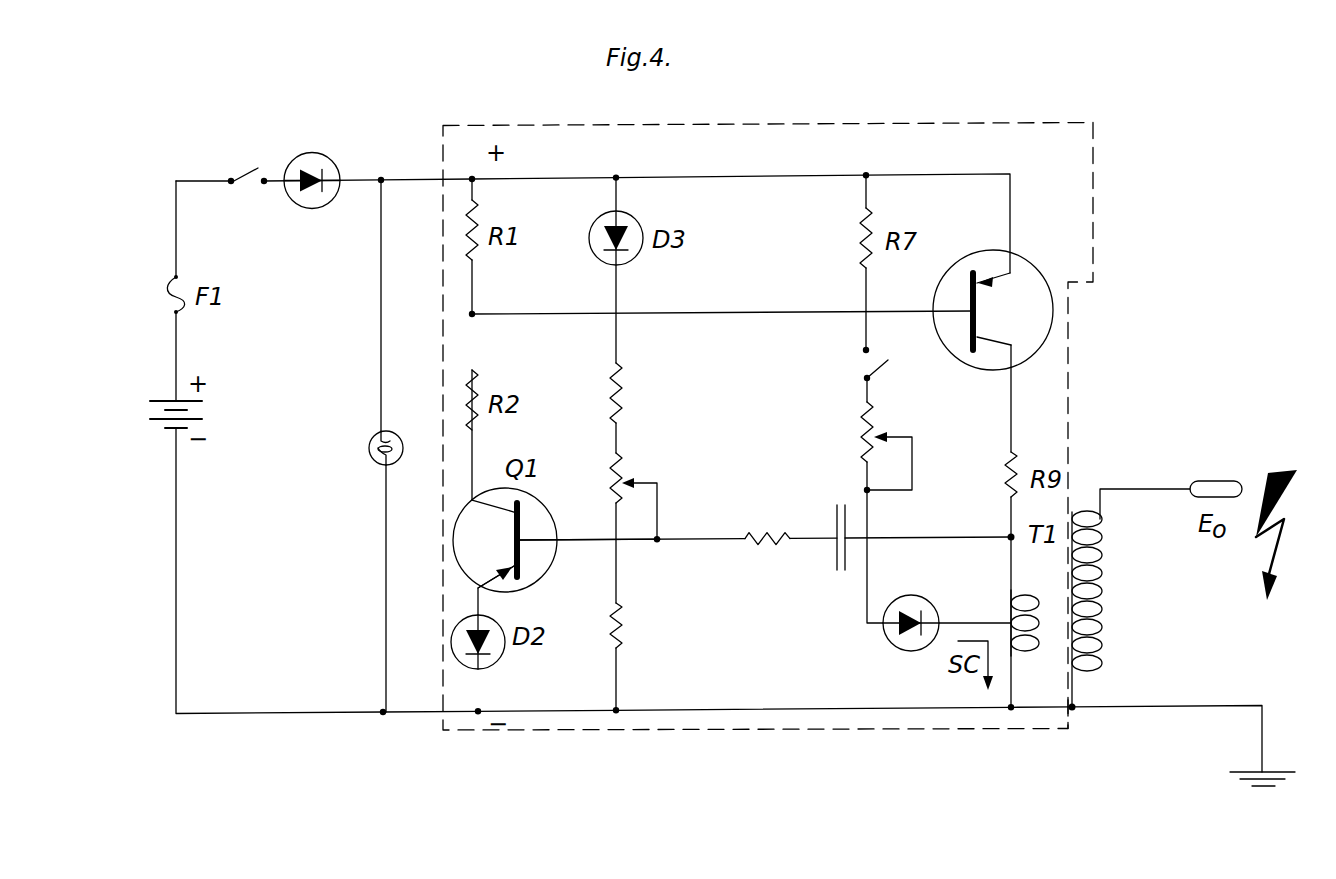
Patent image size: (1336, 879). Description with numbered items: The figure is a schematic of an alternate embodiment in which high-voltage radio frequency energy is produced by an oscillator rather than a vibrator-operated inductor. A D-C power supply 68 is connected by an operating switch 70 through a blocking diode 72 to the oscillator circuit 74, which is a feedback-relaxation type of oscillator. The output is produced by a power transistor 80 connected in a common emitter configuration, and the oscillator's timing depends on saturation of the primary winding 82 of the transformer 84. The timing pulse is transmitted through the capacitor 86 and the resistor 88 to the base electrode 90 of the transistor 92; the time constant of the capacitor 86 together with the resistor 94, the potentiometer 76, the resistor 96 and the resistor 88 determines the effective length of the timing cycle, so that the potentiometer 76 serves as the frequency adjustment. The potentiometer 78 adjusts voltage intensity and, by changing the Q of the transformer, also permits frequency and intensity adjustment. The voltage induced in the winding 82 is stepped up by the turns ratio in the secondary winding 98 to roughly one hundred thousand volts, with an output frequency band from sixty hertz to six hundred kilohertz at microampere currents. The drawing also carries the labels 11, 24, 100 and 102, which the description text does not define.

The indicator lamp 11 is at (389, 431).
The transformer secondary / output 24 is at (1070, 727).
The D-C power supply 68 is at (160, 400).
The operating switch 70 is at (258, 168).
The blocking diode 72 is at (347, 168).
The oscillator circuit 74 is at (795, 123).
The potentiometer 76 is at (620, 466).
The potentiometer 78 is at (875, 403).
The power transistor 80 is at (988, 232).
The primary winding 82 is at (1012, 596).
The transformer 84 is at (1040, 682).
The capacitor 86 is at (853, 494).
The resistor 88 is at (775, 537).
The base electrode 90 is at (578, 540).
The transistor 92 is at (540, 588).
The resistor 94 is at (618, 382).
The resistor 96 is at (620, 614).
The secondary winding 98 is at (1100, 662).
The switch S2 100 is at (888, 360).
The diode D4 102 is at (910, 595).